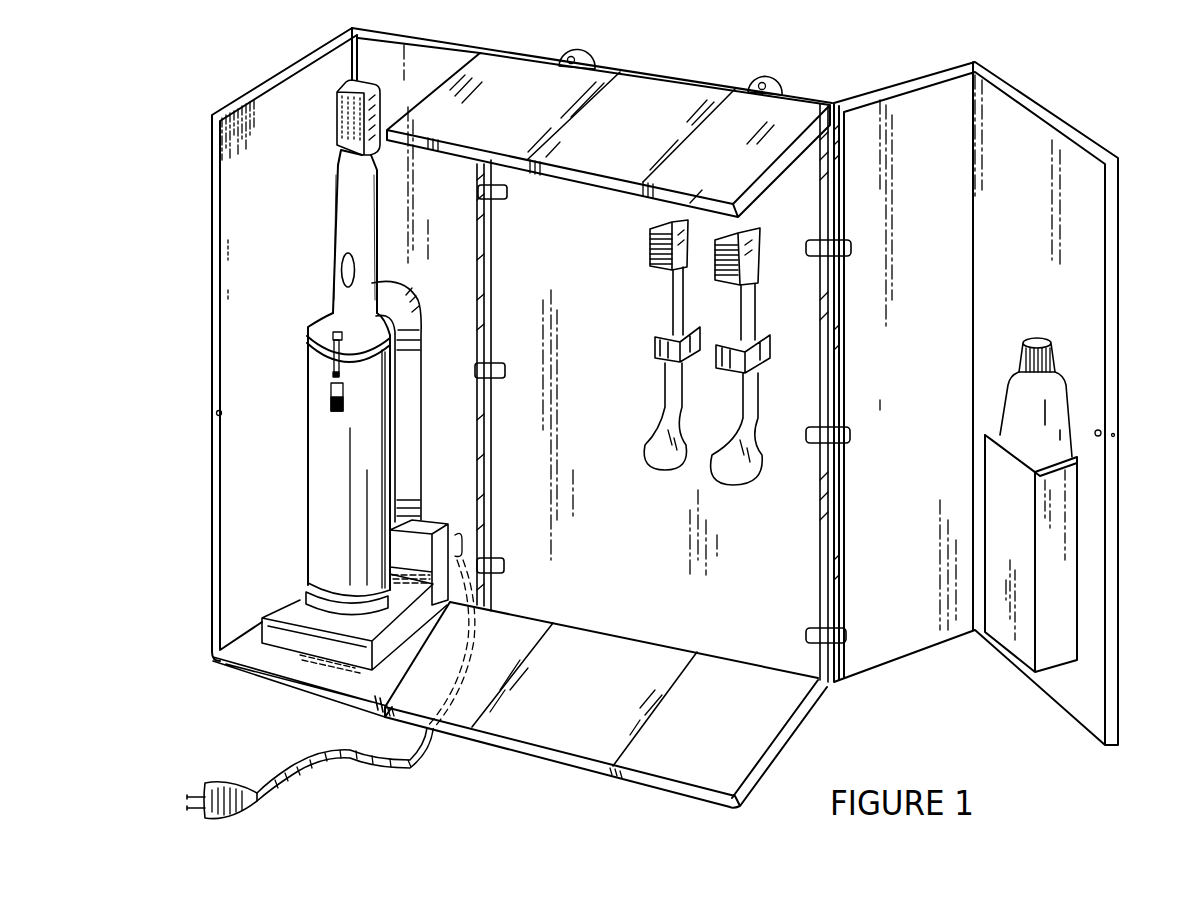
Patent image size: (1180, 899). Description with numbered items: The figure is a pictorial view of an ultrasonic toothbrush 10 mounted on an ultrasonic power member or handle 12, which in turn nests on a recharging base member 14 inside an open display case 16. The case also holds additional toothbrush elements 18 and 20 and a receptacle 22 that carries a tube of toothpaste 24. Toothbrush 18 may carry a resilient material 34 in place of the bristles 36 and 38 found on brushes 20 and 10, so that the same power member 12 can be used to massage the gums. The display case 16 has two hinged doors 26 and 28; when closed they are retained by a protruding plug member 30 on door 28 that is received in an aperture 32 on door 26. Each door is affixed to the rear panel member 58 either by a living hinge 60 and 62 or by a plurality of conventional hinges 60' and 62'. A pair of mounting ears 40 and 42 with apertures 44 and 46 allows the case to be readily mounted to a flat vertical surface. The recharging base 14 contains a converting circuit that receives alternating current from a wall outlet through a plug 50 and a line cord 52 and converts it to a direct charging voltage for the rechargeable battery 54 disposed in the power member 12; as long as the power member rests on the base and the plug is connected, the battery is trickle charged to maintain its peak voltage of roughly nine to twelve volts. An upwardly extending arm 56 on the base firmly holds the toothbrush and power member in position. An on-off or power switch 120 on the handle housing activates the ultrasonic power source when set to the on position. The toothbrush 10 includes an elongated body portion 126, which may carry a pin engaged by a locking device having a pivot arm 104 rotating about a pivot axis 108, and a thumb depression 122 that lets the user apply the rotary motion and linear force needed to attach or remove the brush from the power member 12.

The ultrasonic toothbrush 10 is at (339, 208).
The ultrasonic power member or handle 12 is at (325, 494).
The recharging base member 14 is at (280, 638).
The display case 16 is at (706, 84).
The toothbrush element 18 is at (668, 299).
The toothbrush element 20 is at (757, 271).
The receptacle 22 is at (1077, 588).
The tube of toothpaste 24 is at (1055, 404).
The hinged door 26 is at (213, 343).
The hinged door 28 is at (1090, 246).
The protruding plug member 30 is at (1116, 432).
The aperture 32 is at (216, 414).
The resilient material 34 is at (648, 246).
The bristles 36 is at (749, 230).
The bristles 38 is at (333, 126).
The mounting ear 40 is at (591, 54).
The mounting ear 42 is at (781, 86).
The aperture 44 is at (568, 56).
The aperture 46 is at (764, 81).
The plug 50 is at (233, 793).
The line cord 52 is at (368, 758).
The rechargeable battery 54 is at (309, 589).
The upwardly extending arm 56 is at (414, 314).
The rear panel member 58 is at (648, 580).
The living hinge 60 is at (501, 354).
The conventional hinge 60' is at (507, 382).
The living hinge 62 is at (843, 423).
The conventional hinge 62' is at (844, 441).
The pivot arm 104 is at (332, 341).
The pivot axis 108 is at (333, 366).
The on-off or power switch 120 is at (330, 400).
The thumb depression 122 is at (342, 276).
The elongated body portion 126 is at (338, 234).